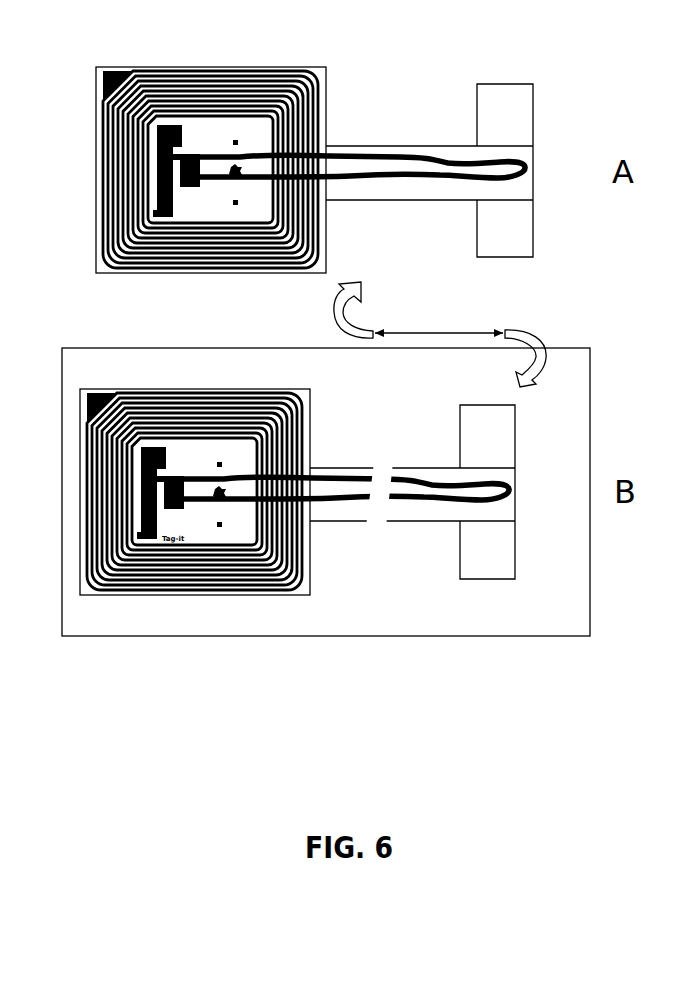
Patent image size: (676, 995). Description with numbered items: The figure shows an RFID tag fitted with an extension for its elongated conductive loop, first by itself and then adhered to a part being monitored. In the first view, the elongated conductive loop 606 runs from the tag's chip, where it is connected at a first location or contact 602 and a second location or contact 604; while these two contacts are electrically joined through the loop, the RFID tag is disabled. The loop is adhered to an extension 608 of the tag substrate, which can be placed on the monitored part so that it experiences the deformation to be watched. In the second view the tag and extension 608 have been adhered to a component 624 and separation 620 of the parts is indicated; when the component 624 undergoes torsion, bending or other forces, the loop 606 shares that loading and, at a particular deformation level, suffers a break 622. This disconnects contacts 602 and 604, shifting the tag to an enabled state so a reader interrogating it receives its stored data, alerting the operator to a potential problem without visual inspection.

In FIG. 6A, the first location or contact 602 is at (210, 118).
In FIG. 6A, the second location or contact 604 is at (210, 221).
In FIG. 6A, the elongated conductive loop 606 is at (397, 156).
In FIG. 6A, the extension 608 is at (477, 224).
In FIG. 6B, the separation movement 620 is at (433, 328).
In FIG. 6B, the break 622 is at (378, 487).
In FIG. 6B, the component 624 is at (326, 492).